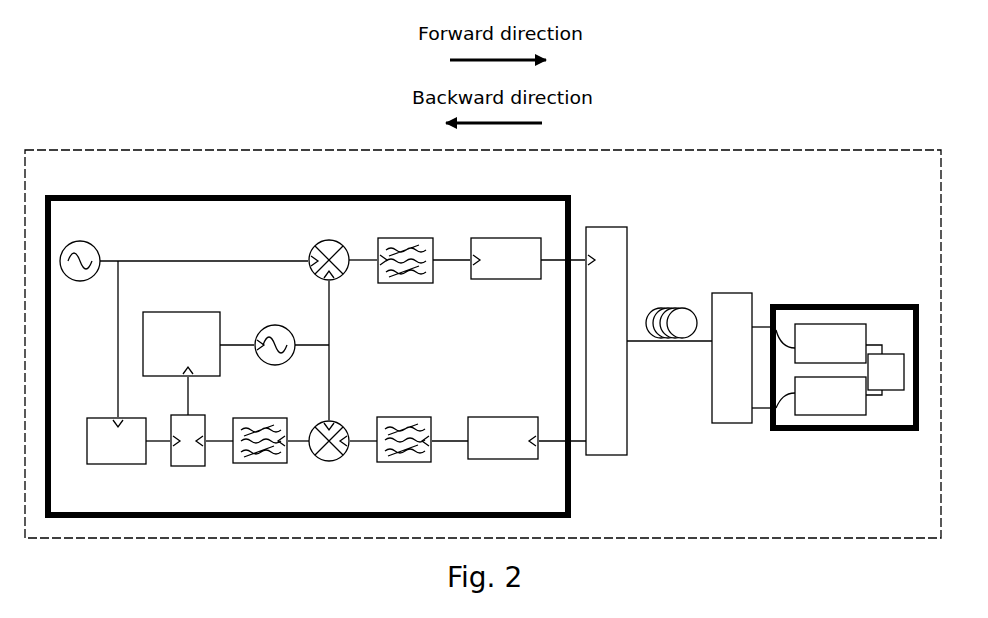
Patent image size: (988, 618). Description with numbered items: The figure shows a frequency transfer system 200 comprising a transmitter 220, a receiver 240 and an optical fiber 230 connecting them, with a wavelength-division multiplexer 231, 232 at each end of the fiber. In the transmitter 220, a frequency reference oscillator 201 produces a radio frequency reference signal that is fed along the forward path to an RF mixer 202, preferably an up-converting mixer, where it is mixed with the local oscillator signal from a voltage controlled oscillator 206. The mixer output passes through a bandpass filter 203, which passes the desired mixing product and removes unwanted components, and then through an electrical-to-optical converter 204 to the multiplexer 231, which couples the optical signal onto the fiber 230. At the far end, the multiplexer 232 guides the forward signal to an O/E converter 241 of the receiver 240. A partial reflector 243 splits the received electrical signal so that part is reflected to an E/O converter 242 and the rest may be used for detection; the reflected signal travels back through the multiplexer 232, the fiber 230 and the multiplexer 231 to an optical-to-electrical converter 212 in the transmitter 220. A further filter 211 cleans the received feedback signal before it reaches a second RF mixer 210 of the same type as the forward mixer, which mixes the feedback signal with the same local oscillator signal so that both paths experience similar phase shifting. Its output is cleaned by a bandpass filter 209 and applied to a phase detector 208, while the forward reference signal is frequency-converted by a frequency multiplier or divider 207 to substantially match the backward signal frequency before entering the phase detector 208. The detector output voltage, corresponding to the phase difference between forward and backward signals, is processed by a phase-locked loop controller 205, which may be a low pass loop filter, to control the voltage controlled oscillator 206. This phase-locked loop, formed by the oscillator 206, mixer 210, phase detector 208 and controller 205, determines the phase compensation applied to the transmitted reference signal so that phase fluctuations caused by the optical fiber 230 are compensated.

The frequency transfer system 200 is at (313, 150).
The transmitter 220 is at (308, 340).
The frequency reference oscillator 201 is at (74, 280).
The RF mixer 202 is at (329, 240).
The bandpass filter 203 is at (405, 238).
The electrical-to-optical converter 204 is at (520, 238).
The phase-locked loop controller 205 is at (191, 312).
The voltage controlled oscillator 206 is at (279, 325).
The frequency multiplier or divider 207 is at (123, 464).
The phase detector 208 is at (198, 466).
The bandpass filter 209 is at (273, 463).
The RF mixer 210 is at (349, 476).
The filter 211 is at (409, 462).
The optical-to-electrical converter 212 is at (507, 459).
The optical fiber 230 is at (669, 308).
The wavelength-division multiplexer 231 is at (603, 227).
The wavelength-division multiplexer 232 is at (726, 293).
The receiver 240 is at (866, 431).
The O/E converter 241 is at (812, 324).
The E/O converter 242 is at (821, 415).
The partial reflector 243 is at (902, 354).